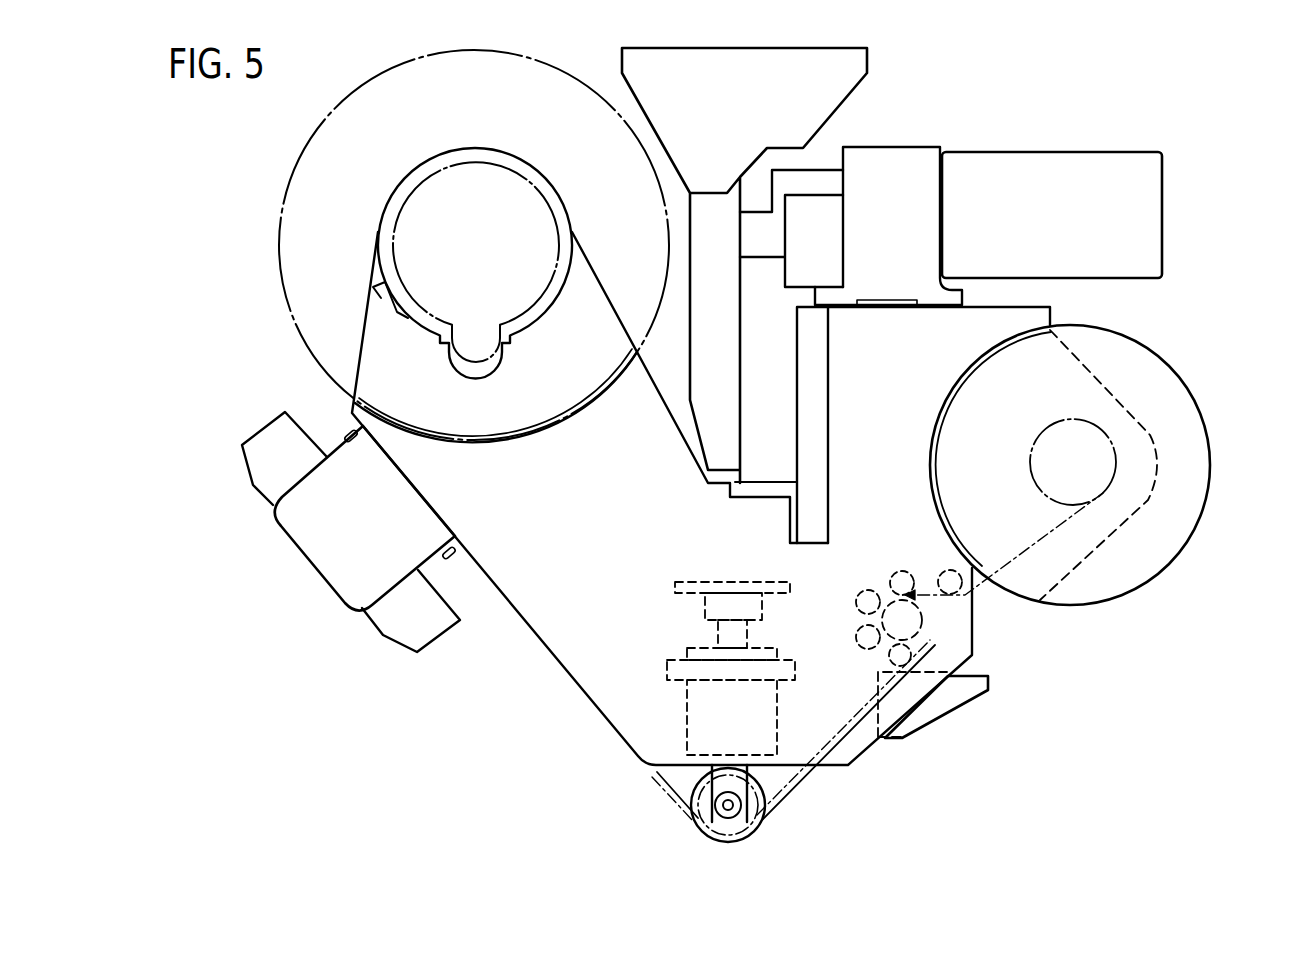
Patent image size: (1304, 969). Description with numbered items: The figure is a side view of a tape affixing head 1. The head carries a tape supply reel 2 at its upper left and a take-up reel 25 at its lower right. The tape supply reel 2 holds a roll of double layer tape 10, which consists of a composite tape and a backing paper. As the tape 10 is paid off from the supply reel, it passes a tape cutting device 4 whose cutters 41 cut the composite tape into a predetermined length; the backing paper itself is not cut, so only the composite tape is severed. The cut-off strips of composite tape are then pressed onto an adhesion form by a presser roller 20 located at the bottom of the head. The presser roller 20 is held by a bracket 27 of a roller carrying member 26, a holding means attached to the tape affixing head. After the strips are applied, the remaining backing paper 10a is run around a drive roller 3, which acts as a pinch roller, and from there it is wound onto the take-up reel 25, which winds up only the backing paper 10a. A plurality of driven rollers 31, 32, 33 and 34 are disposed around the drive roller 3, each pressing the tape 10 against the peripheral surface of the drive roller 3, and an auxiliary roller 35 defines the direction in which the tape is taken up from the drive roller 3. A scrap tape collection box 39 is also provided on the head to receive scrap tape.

The tape affixing head 1 is at (568, 668).
The tape supply reel 2 is at (284, 223).
The drive roller 3 is at (912, 650).
The tape cutting device 4 is at (284, 562).
The double layer tape 10 is at (660, 787).
The backing paper 10a is at (790, 798).
The presser roller 20 is at (692, 816).
The take-up reel 25 is at (1195, 348).
The roller carrying member 26 is at (684, 705).
The bracket 27 is at (752, 800).
The driven roller 31 is at (876, 660).
The driven roller 32 is at (855, 635).
The driven roller 33 is at (870, 588).
The driven roller 34 is at (903, 570).
The auxiliary roller 35 is at (953, 570).
The scrap tape collection box 39 is at (977, 697).
The cutter 41 is at (340, 428).